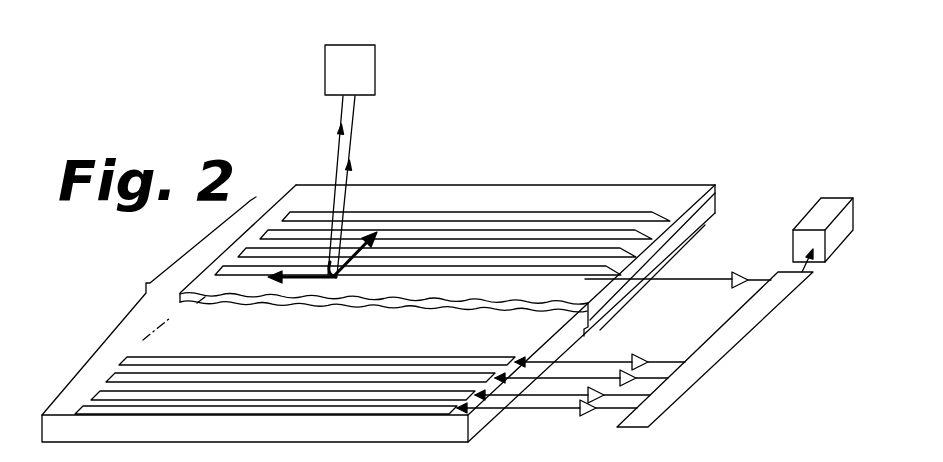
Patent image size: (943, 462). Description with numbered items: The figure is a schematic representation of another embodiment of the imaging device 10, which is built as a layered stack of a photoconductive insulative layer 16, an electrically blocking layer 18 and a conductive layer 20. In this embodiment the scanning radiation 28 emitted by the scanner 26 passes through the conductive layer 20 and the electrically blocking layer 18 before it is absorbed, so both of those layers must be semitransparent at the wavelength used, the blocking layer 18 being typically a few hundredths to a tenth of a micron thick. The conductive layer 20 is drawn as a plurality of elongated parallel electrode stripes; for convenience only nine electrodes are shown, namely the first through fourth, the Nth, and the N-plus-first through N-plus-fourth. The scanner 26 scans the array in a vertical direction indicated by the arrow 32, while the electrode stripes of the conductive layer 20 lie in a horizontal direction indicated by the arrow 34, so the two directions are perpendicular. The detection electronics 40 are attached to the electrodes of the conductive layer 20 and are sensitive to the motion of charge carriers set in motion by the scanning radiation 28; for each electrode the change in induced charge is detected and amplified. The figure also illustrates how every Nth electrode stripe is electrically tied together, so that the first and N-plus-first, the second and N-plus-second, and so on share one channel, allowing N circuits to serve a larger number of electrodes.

The imaging device 10 is at (590, 150).
The photoconductive insulative layer 16 is at (714, 208).
The electrically blocking layer 18 is at (716, 184).
The conductive layer 20 is at (147, 283).
The scanner 26 is at (377, 64).
The scanning radiation 28 is at (350, 149).
The arrow indicating scan direction 32 is at (350, 260).
The arrow indicating electrode direction 34 is at (308, 279).
The detection electronics 40 is at (810, 210).